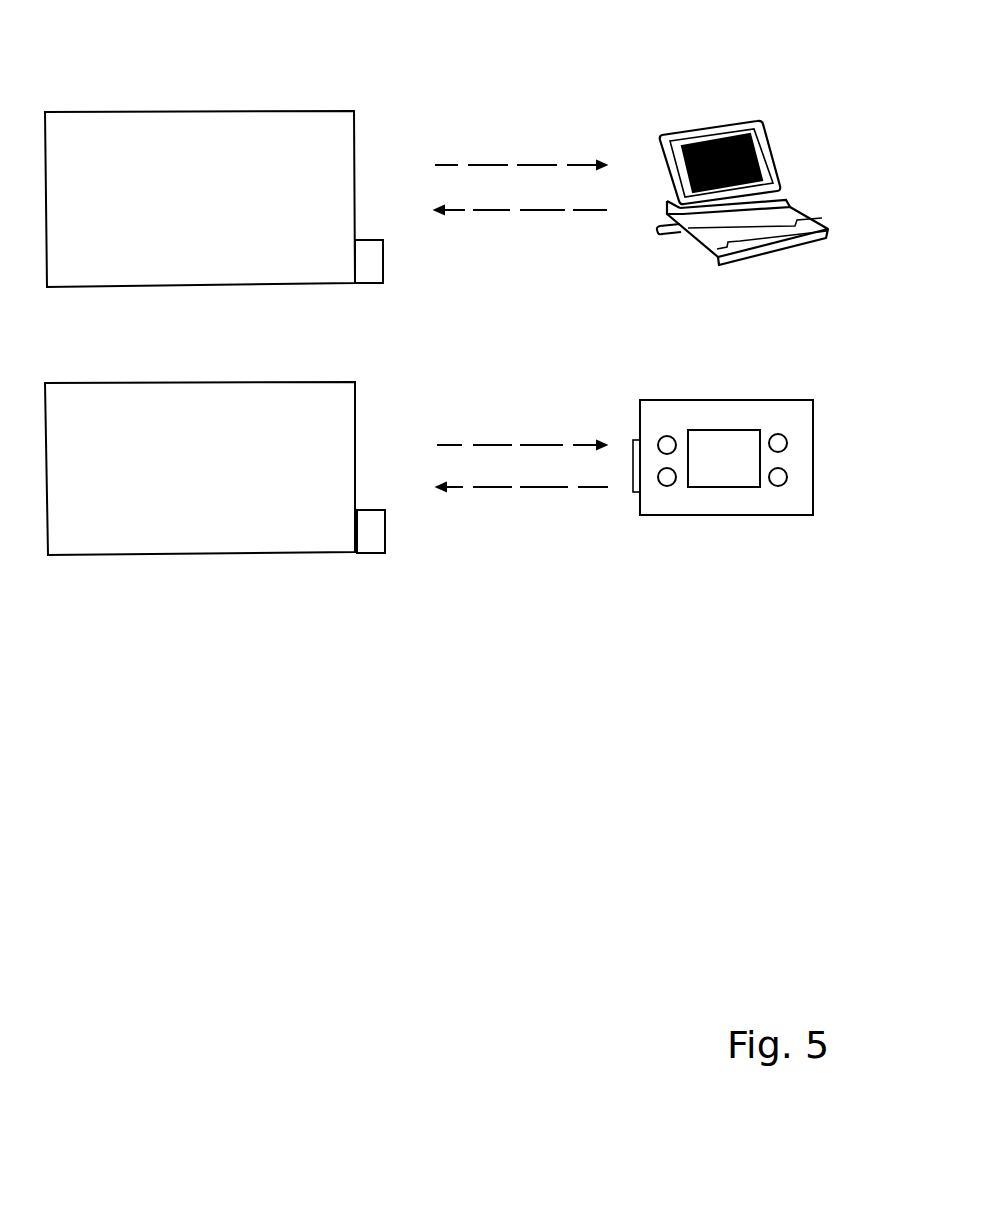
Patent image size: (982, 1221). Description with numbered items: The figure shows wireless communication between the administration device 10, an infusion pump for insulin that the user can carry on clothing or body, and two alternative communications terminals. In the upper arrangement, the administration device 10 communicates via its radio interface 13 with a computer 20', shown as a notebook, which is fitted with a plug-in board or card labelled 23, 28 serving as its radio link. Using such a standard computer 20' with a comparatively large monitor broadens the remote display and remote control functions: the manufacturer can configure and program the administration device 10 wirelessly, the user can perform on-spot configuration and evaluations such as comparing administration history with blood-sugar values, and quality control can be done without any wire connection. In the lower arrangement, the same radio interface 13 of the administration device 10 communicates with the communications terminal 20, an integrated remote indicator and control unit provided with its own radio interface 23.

The administration device 10 is at (200, 333).
The radio interface 13 is at (367, 237).
The computer 20' is at (655, 313).
The communications terminal 20 is at (726, 434).
The radio interface 23 is at (645, 403).
The plug-in board or card 28 is at (668, 229).